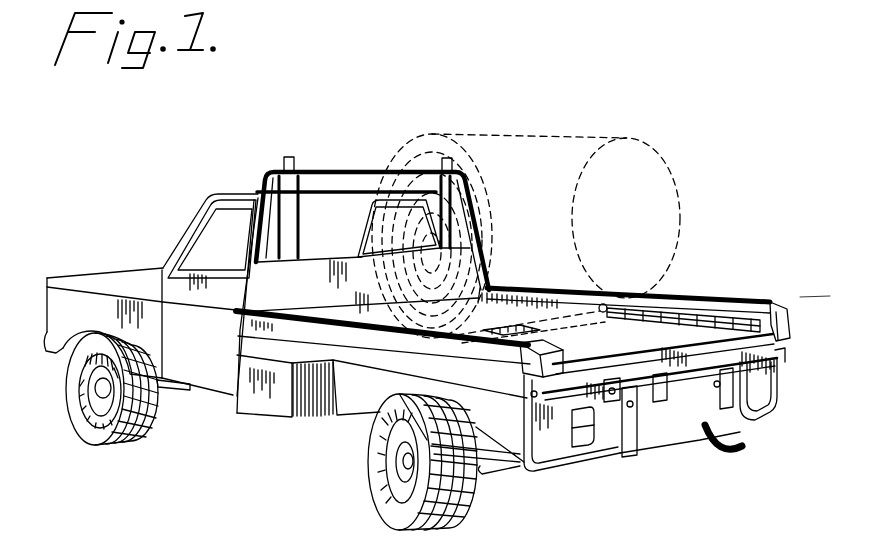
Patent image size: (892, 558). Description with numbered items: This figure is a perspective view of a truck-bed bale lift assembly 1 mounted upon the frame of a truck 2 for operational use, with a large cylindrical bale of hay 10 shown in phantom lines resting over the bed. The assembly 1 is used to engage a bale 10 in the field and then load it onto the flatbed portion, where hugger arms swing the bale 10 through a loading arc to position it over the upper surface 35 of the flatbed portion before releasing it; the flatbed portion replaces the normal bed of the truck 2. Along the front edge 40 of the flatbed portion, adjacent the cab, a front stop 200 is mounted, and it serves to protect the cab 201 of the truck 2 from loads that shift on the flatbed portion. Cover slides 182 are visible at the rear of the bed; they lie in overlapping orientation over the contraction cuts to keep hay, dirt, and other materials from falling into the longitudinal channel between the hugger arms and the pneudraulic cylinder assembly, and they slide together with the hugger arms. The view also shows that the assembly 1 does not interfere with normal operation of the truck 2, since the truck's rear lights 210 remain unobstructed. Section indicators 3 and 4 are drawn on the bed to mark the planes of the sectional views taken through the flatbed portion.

The truck-bed bale lift assembly 1 is at (699, 288).
The truck 2 is at (60, 283).
The section line 3- 3 is at (800, 293).
The section line 4-4 / side rail 4 is at (608, 297).
The bale of hay 10 is at (578, 133).
The upper surface 35 is at (618, 347).
The front edge 40 is at (340, 320).
The cover slides 182 is at (781, 350).
The front stop 200 is at (268, 172).
The cab 201 is at (193, 222).
The rear lights 210 is at (748, 417).